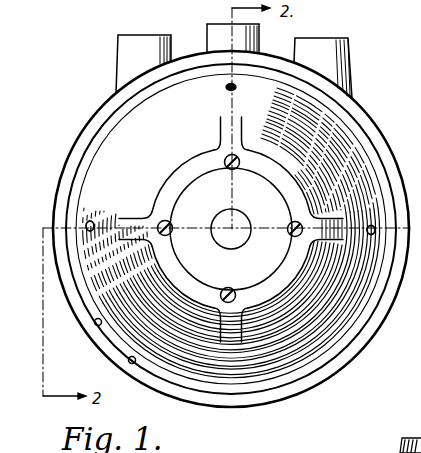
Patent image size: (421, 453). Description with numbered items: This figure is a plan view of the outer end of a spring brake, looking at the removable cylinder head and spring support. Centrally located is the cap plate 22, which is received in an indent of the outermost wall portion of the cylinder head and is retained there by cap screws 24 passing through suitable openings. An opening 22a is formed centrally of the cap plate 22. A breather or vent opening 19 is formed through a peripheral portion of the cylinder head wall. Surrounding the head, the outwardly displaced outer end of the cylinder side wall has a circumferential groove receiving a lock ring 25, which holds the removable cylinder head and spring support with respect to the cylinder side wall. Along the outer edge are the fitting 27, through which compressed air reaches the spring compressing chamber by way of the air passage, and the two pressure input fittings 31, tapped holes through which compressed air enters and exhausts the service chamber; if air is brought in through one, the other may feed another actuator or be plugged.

The breather or vent opening 19 is at (236, 87).
The cap plate 22 is at (208, 167).
The opening 22a is at (236, 243).
The cap screws 24 is at (287, 228).
The lock ring 25 is at (93, 315).
The fitting 27 is at (215, 33).
The pressure input fitting 31 is at (136, 42).